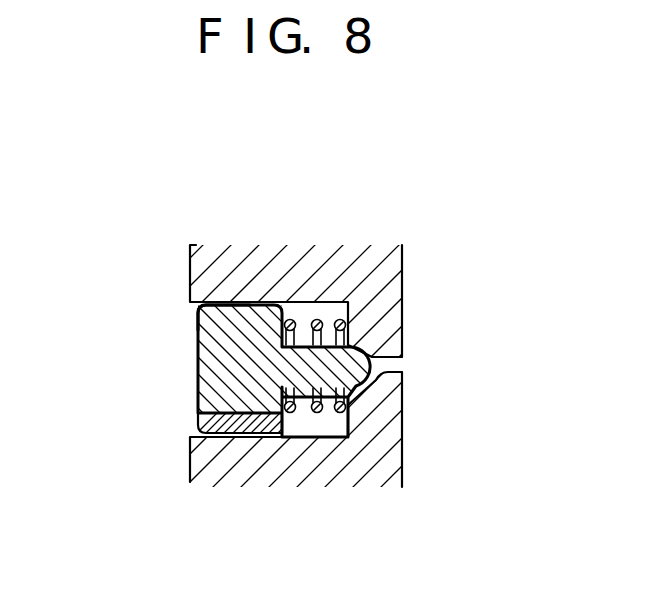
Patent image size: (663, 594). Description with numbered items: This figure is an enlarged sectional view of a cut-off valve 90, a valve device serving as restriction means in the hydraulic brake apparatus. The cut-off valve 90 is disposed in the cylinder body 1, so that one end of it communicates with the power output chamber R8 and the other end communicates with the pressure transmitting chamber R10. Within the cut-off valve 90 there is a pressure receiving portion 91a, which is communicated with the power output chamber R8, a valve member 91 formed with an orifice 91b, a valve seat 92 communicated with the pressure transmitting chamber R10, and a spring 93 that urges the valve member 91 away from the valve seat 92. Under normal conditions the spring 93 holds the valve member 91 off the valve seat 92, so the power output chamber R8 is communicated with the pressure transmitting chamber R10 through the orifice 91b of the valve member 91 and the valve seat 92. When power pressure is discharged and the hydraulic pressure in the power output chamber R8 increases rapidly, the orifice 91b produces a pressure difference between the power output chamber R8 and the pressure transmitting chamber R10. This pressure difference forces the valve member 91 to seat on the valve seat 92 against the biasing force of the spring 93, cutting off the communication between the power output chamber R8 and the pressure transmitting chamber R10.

The cylinder body 1 is at (228, 265).
The cut-off valve 90 is at (277, 354).
The valve member 91 is at (233, 383).
The pressure receiving portion 91a is at (207, 353).
The orifice 91b is at (195, 433).
The valve seat 92 is at (402, 372).
The spring 93 is at (318, 318).
The power output chamber R8 is at (162, 371).
The pressure transmitting chamber R10 is at (420, 373).